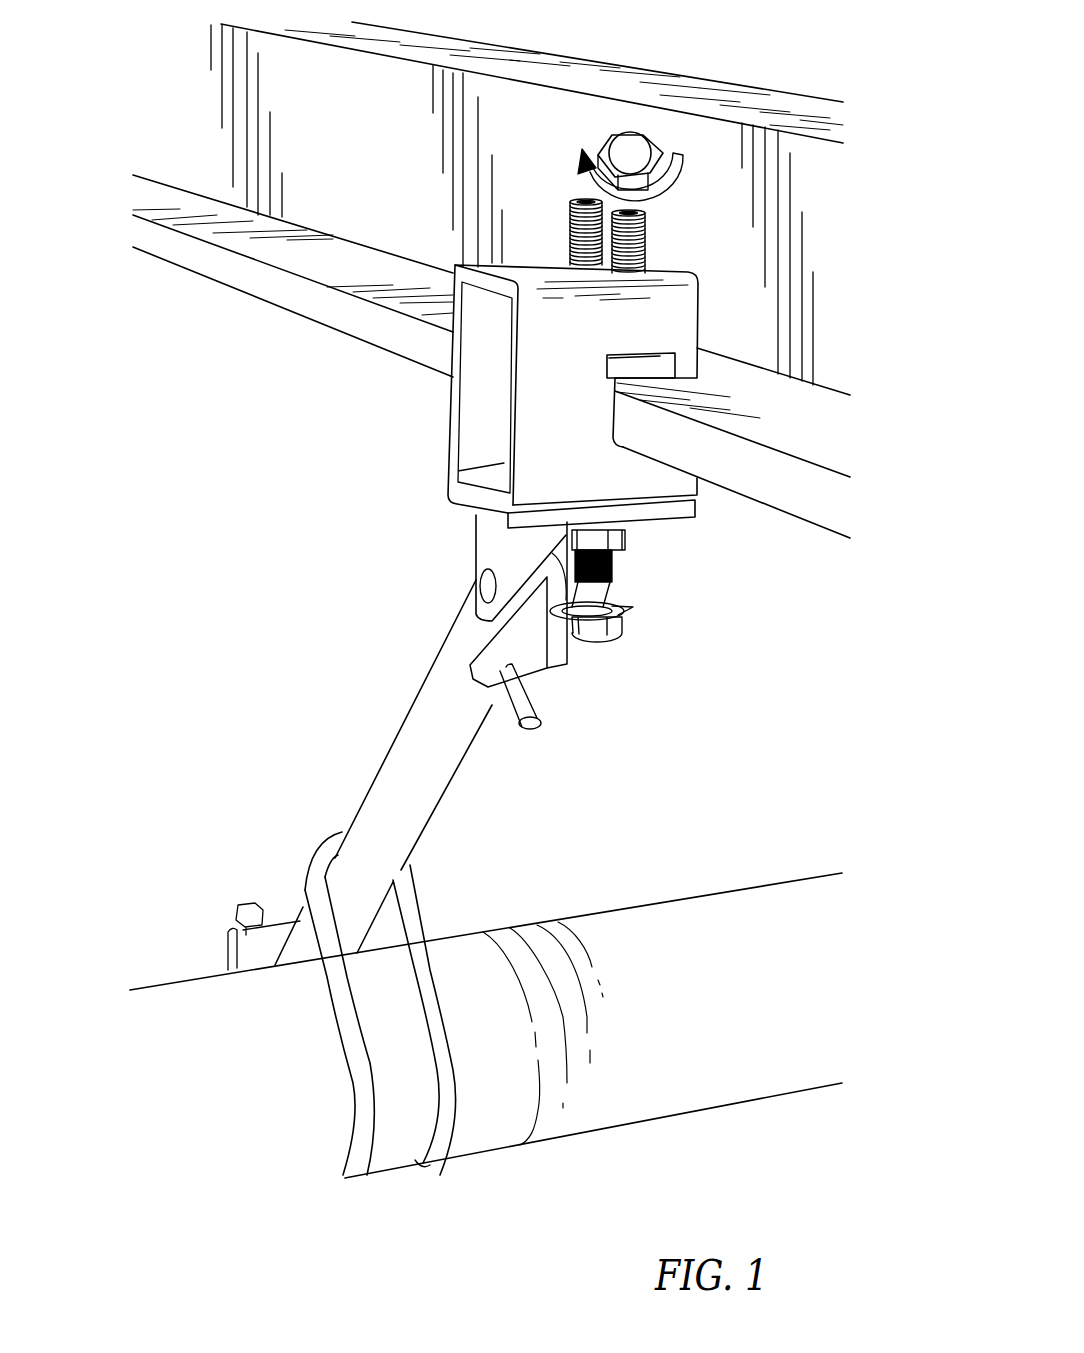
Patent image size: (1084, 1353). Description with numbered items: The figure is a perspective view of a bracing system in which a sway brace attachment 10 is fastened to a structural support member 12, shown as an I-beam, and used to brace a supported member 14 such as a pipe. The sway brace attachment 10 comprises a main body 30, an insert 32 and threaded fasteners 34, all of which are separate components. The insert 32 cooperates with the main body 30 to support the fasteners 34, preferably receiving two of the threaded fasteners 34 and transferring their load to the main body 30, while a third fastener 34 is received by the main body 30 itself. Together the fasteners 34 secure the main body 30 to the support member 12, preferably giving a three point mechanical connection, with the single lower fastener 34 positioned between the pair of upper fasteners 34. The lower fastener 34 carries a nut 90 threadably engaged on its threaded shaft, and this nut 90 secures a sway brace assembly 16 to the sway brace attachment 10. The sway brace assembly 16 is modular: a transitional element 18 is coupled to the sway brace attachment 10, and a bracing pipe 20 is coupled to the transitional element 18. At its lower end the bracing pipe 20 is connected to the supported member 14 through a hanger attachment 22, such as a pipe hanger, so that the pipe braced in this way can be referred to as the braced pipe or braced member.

The sway brace attachment 10 is at (803, 116).
The support member 12 is at (293, 292).
The supported member 14 is at (674, 912).
The sway brace assembly 16 is at (420, 845).
The transitional element 18 is at (617, 666).
The bracing pipe 20 is at (428, 775).
The hanger attachment 22 is at (426, 897).
The main body 30 is at (715, 290).
The insert 32 is at (648, 373).
The threaded fasteners 34 is at (571, 232).
The nut 90 is at (632, 542).